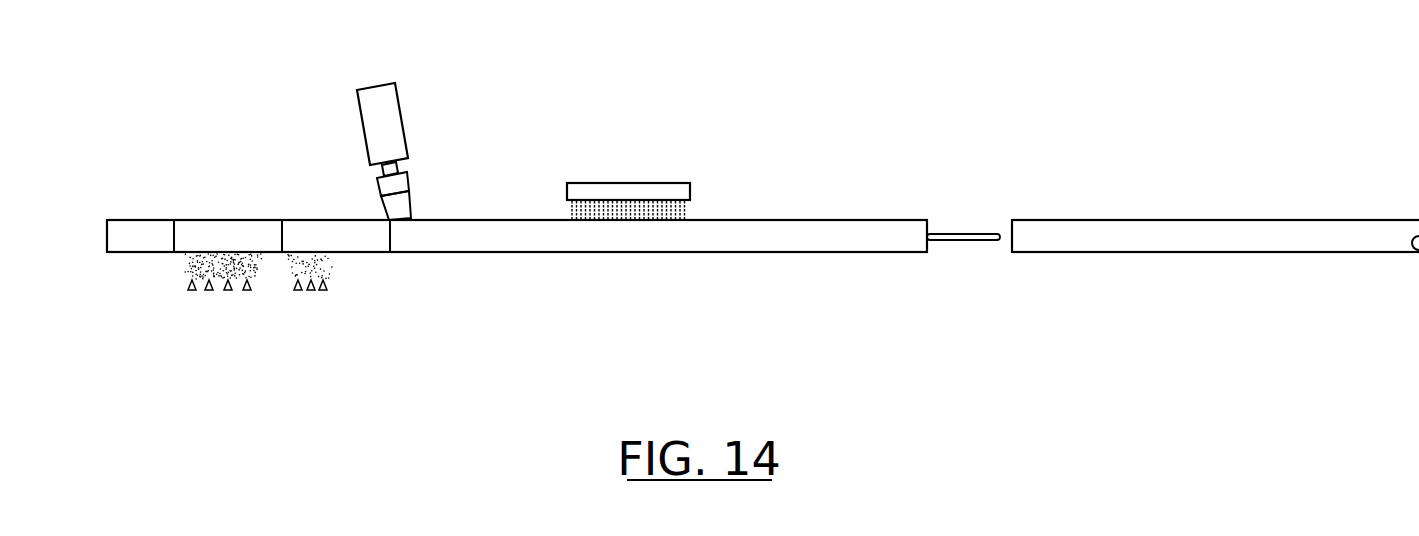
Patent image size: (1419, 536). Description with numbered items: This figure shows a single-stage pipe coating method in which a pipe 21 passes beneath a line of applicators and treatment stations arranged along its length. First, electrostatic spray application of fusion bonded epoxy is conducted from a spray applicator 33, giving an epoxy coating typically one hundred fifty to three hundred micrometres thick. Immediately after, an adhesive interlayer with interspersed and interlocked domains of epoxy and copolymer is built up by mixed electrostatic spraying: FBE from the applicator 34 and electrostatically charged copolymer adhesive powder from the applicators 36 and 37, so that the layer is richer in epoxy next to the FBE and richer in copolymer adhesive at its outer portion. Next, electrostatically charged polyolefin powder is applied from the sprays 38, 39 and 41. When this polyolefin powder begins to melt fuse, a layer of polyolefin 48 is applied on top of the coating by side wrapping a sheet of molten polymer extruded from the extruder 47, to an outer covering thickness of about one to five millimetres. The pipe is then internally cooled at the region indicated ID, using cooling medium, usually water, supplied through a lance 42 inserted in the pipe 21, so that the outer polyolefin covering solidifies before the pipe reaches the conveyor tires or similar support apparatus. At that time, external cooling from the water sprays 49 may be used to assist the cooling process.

The pipe 21 is at (115, 228).
The spray applicator 33 is at (187, 285).
The applicator 34 is at (207, 292).
The applicator 36 is at (228, 292).
The applicator 37 is at (247, 292).
The spray 38 is at (297, 292).
The spray 39 is at (311, 292).
The spray 41 is at (327, 284).
The extruder 47 is at (392, 117).
The layer of polyolefin 48 is at (402, 202).
The water sprays 49 is at (638, 183).
The lance 42 is at (965, 232).
The region of internal cooling ID is at (461, 253).